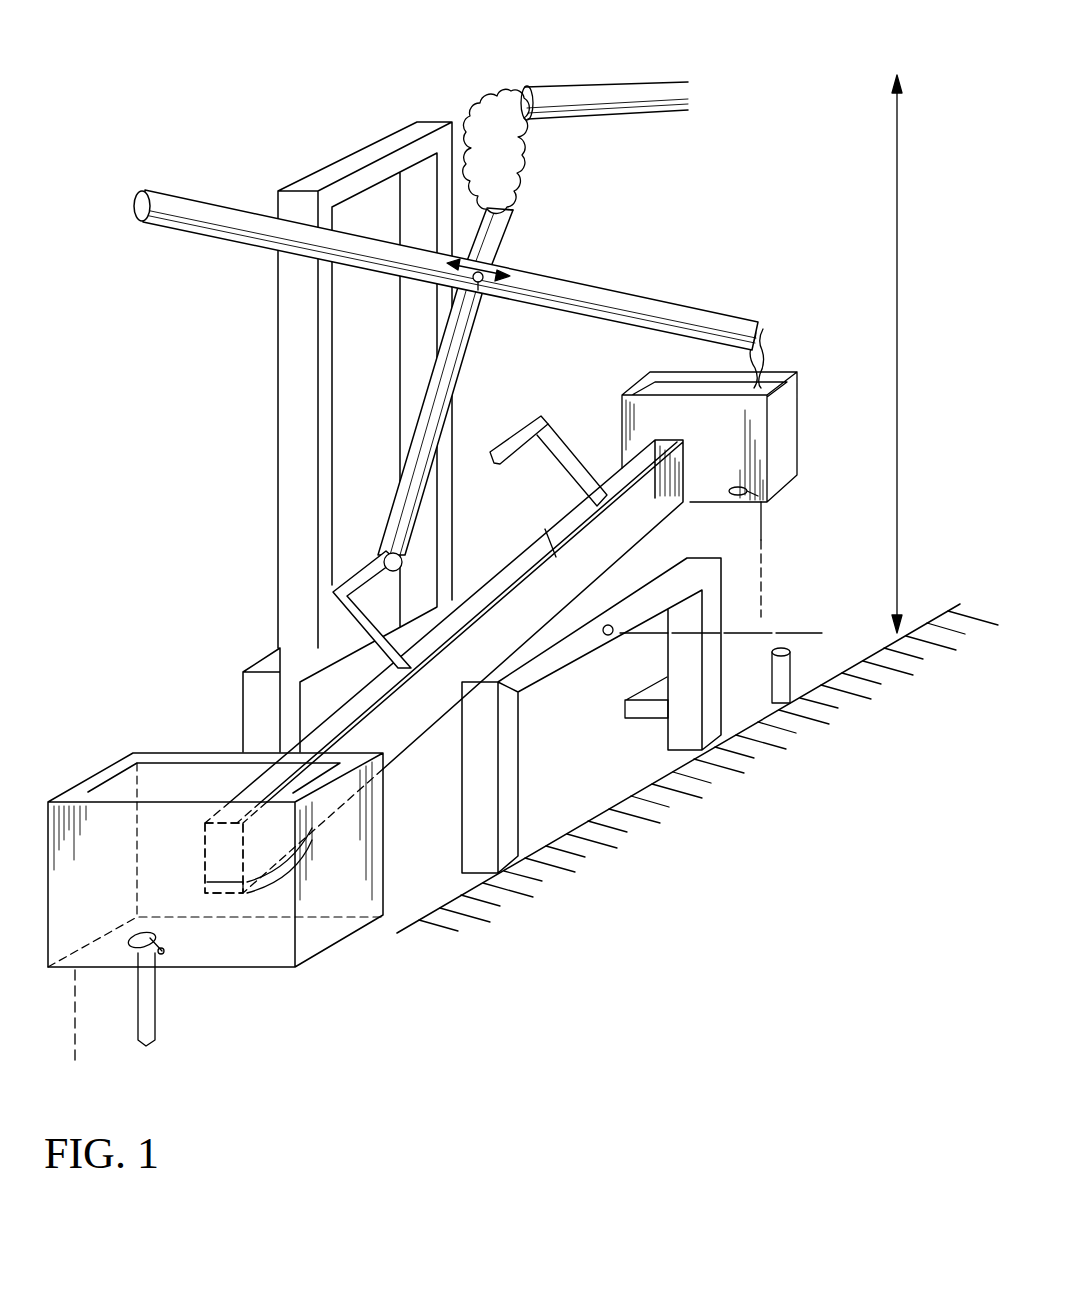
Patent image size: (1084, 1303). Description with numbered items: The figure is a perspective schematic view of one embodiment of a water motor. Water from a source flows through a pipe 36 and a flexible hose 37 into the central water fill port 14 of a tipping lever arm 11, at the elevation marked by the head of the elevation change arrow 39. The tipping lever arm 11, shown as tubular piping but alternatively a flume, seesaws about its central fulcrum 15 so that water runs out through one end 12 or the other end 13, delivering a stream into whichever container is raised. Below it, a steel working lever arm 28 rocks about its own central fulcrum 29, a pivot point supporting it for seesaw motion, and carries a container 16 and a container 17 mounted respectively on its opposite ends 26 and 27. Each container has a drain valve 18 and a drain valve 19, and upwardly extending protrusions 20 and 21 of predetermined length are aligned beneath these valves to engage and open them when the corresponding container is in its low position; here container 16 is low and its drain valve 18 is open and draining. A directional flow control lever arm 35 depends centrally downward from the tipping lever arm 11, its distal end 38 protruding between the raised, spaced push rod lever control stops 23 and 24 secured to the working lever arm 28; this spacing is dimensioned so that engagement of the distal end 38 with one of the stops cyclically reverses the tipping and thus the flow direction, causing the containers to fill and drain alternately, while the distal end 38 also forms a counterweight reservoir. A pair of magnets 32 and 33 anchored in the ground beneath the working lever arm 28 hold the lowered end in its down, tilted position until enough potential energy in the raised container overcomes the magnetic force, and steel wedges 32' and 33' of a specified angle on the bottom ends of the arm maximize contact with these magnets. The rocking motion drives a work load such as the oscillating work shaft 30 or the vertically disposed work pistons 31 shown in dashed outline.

The tipping lever arm 11 is at (630, 297).
The pipe inlet end 12 is at (140, 209).
The liquid stream 13 is at (757, 322).
The central water fill port 14 is at (512, 226).
The central fulcrum 15 is at (477, 285).
The container 16 is at (230, 958).
The container 17 is at (777, 422).
The drain valve 18 is at (165, 953).
The drain valve 19 is at (748, 486).
The upwardly extending protrusion 20 is at (157, 1032).
The upwardly extending protrusion 21 is at (792, 673).
The push rod lever control stop 23 is at (360, 585).
The push rod lever control stop 24 is at (519, 437).
The end of work lever arm 26 is at (378, 735).
The end of work lever arm 27 is at (670, 477).
The working lever arm 28 is at (548, 582).
The central fulcrum 29 is at (608, 636).
The oscillating work shaft 30 is at (803, 633).
The work piston 31 is at (75, 1037).
The magnet 32 is at (261, 915).
The steel wedge 32' is at (335, 899).
The magnet 33 is at (633, 726).
The steel wedge 33' is at (790, 571).
The directional flow control lever arm 35 is at (466, 345).
The pipe 36 is at (624, 108).
The flexible hose 37 is at (487, 100).
The distal end 38 is at (402, 568).
The elevation change arrow 39 is at (897, 155).